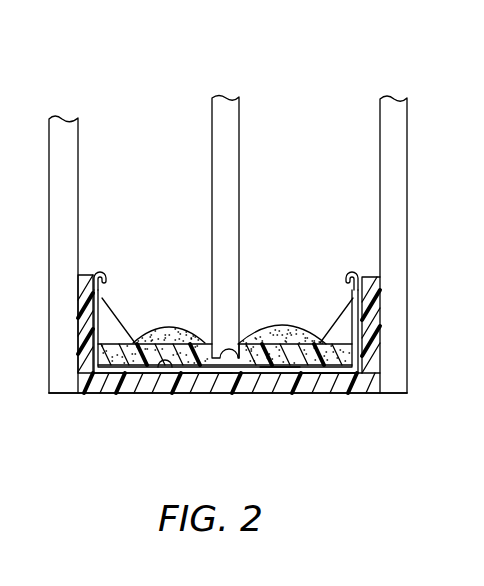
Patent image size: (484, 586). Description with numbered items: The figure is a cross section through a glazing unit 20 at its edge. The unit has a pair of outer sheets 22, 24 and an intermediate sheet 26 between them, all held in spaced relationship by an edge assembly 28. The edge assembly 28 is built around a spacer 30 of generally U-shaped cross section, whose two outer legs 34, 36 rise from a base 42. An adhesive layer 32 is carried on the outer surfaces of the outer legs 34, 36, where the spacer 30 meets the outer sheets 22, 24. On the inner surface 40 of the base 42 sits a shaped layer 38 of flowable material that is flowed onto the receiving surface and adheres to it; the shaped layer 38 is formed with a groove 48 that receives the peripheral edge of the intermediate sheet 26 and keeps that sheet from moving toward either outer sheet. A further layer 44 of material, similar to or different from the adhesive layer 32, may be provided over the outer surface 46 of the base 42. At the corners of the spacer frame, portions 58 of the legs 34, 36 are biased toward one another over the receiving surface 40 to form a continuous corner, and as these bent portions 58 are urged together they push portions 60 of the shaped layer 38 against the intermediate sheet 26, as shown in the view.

The glazing unit 20 is at (420, 112).
The outer sheet 22 is at (407, 213).
The outer sheet 24 is at (78, 137).
The intermediate sheet 26 is at (221, 97).
The edge assembly 28 is at (86, 412).
The spacer 30 is at (339, 388).
The adhesive layer 32 is at (82, 283).
The outer leg 34 is at (353, 298).
The outer leg 36 is at (102, 298).
The shaped layer 38 is at (158, 334).
The inner surface 40 is at (166, 370).
The base 42 is at (280, 370).
The layer 44 is at (195, 394).
The outer surface 46 is at (312, 376).
The groove 48 is at (242, 368).
The bent portions 58 is at (110, 314).
The portions of the shaped layer 60 is at (197, 332).